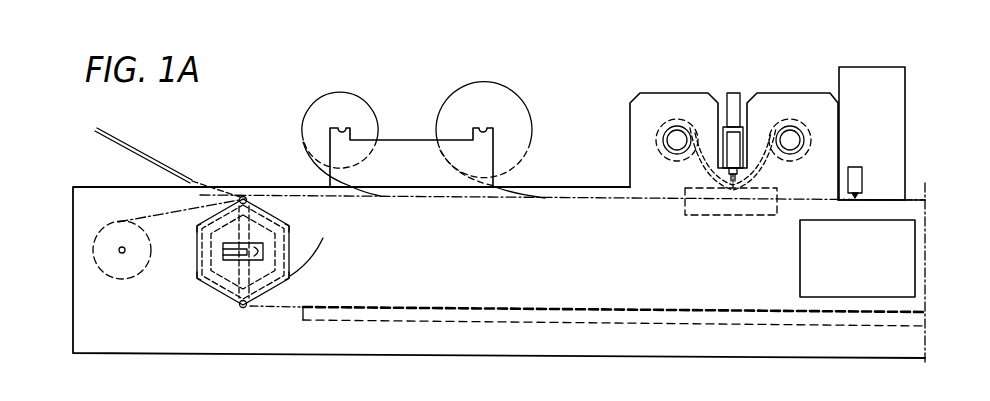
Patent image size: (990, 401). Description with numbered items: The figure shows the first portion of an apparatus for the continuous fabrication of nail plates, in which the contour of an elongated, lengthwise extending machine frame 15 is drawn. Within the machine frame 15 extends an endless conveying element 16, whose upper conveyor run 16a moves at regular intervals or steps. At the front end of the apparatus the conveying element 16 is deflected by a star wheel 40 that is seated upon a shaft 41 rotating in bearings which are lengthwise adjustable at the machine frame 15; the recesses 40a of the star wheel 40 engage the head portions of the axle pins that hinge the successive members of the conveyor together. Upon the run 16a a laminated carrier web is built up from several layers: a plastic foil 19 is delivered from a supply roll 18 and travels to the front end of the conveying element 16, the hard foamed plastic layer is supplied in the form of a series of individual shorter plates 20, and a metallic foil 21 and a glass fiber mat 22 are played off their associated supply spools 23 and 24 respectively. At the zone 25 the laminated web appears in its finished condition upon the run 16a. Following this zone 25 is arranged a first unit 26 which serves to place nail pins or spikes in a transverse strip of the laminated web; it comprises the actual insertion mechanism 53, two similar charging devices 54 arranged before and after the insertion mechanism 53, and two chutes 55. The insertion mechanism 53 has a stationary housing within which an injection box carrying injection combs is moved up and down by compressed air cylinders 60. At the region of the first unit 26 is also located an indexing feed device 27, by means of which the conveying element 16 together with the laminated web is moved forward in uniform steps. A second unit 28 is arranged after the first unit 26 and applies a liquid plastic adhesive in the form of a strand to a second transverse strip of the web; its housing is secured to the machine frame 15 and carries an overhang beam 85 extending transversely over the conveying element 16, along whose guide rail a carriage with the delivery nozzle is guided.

The machine frame 15 is at (95, 335).
The conveying element 16 is at (282, 310).
The conveyor run 16a is at (420, 199).
The supply roll 18 is at (103, 227).
The plastic foil 19 is at (153, 213).
The plates 20 is at (178, 172).
The metallic foil 21 is at (350, 184).
The glass fiber mat 22 is at (497, 183).
The supply spool 23 is at (342, 102).
The supply spool 24 is at (497, 102).
The zone 25 is at (583, 198).
The first unit 26 is at (751, 92).
The indexing feed device 27 is at (735, 213).
The second unit 28 is at (895, 97).
The star wheel 40 is at (232, 290).
The recesses 40a is at (285, 233).
The shaft 41 is at (247, 250).
The insertion mechanism 53 is at (730, 135).
The charging device 54 is at (665, 118).
The chute 55 is at (707, 166).
The compressed air cylinder 60 is at (738, 112).
The overhang beam 85 is at (853, 183).